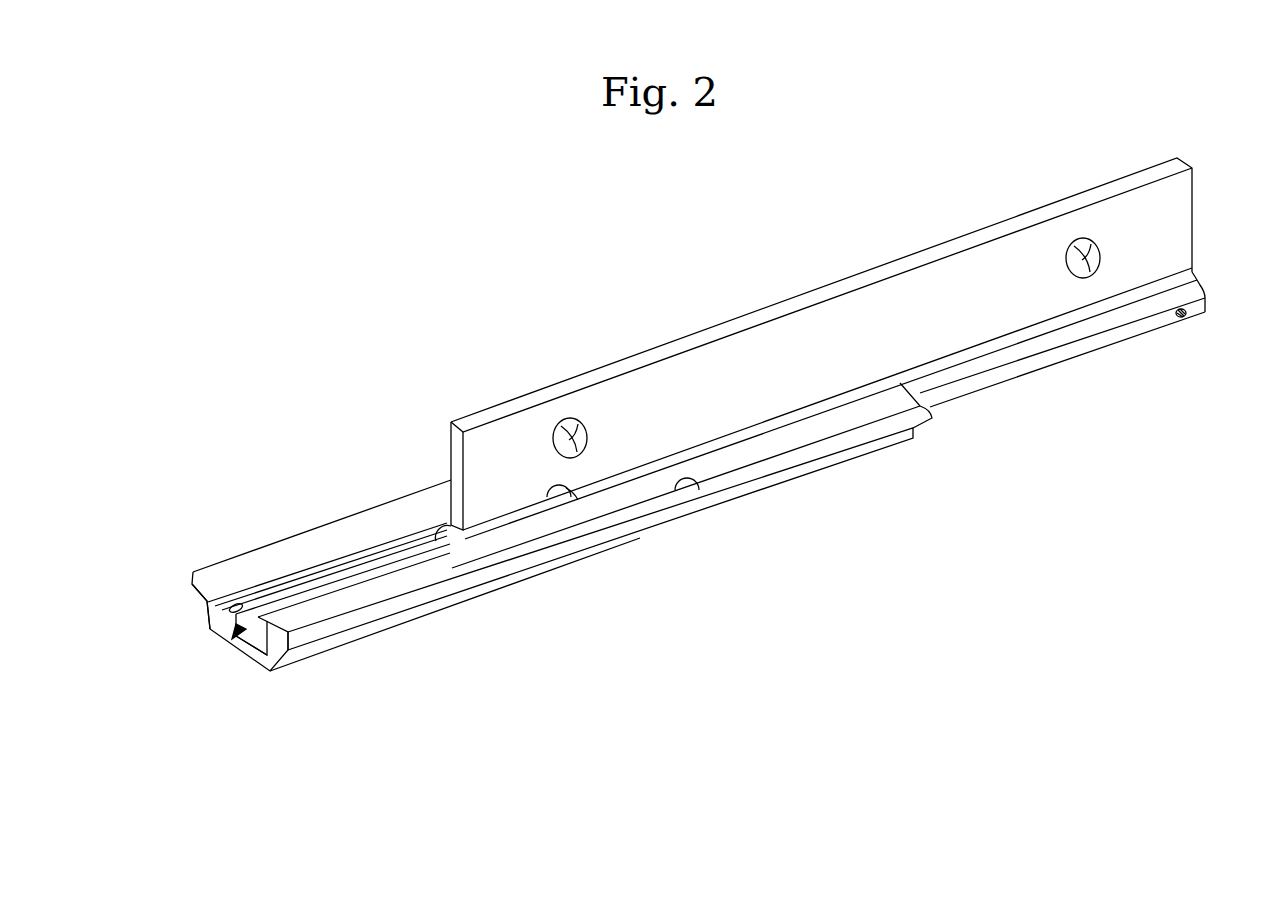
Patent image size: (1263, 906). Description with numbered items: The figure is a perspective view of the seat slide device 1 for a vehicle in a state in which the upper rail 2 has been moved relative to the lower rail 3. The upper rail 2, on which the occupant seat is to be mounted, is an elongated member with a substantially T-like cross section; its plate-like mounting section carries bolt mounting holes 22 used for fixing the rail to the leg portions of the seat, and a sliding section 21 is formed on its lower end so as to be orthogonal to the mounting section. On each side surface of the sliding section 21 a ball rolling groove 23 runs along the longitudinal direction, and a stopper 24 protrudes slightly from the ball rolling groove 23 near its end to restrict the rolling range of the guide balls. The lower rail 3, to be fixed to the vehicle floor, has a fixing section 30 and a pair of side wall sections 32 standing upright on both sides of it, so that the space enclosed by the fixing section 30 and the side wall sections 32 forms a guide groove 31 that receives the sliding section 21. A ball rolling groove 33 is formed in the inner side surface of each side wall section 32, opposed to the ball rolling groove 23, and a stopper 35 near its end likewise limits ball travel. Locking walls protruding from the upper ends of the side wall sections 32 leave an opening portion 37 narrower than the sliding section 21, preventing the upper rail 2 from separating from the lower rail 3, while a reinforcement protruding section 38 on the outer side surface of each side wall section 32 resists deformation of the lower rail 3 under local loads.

The seat slide device 1 is at (396, 384).
The upper rail 2 is at (818, 292).
The sliding section 21 is at (978, 398).
The bolt mounting holes 22 is at (568, 420).
The ball rolling groove 23 is at (1058, 357).
The stopper 24 is at (1187, 318).
The lower rail 3 is at (788, 483).
The fixing section 30 is at (234, 654).
The guide groove 31 is at (228, 641).
The side wall sections 32 is at (203, 615).
The ball rolling groove 33 is at (350, 568).
The stopper 35 is at (248, 605).
The opening portion 37 is at (574, 492).
The reinforcement protruding section 38 is at (688, 482).